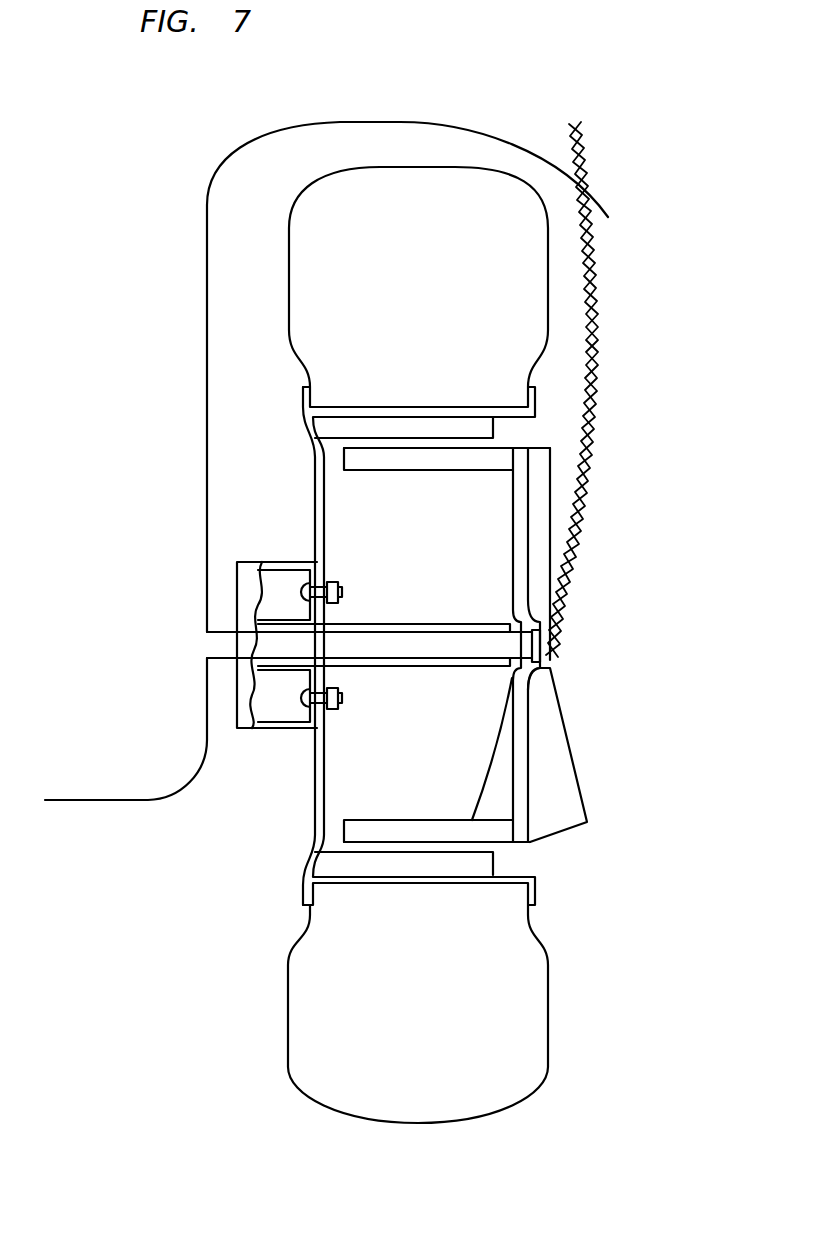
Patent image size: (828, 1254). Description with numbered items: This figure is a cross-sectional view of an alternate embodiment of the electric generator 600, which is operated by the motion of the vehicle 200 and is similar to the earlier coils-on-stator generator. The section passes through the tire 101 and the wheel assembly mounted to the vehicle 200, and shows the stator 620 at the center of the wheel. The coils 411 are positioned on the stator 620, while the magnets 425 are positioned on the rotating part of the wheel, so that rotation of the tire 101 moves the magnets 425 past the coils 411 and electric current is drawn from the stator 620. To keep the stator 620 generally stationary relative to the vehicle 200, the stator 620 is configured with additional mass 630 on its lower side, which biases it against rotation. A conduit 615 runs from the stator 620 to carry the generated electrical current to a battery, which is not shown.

The tire 101 is at (443, 284).
The vehicle 200 is at (156, 759).
The coils 411 is at (425, 460).
The magnets 425 is at (331, 427).
The electric generator 600 is at (535, 482).
The conduit 615 is at (592, 392).
The stator 620 is at (508, 515).
The mass 630 is at (563, 762).